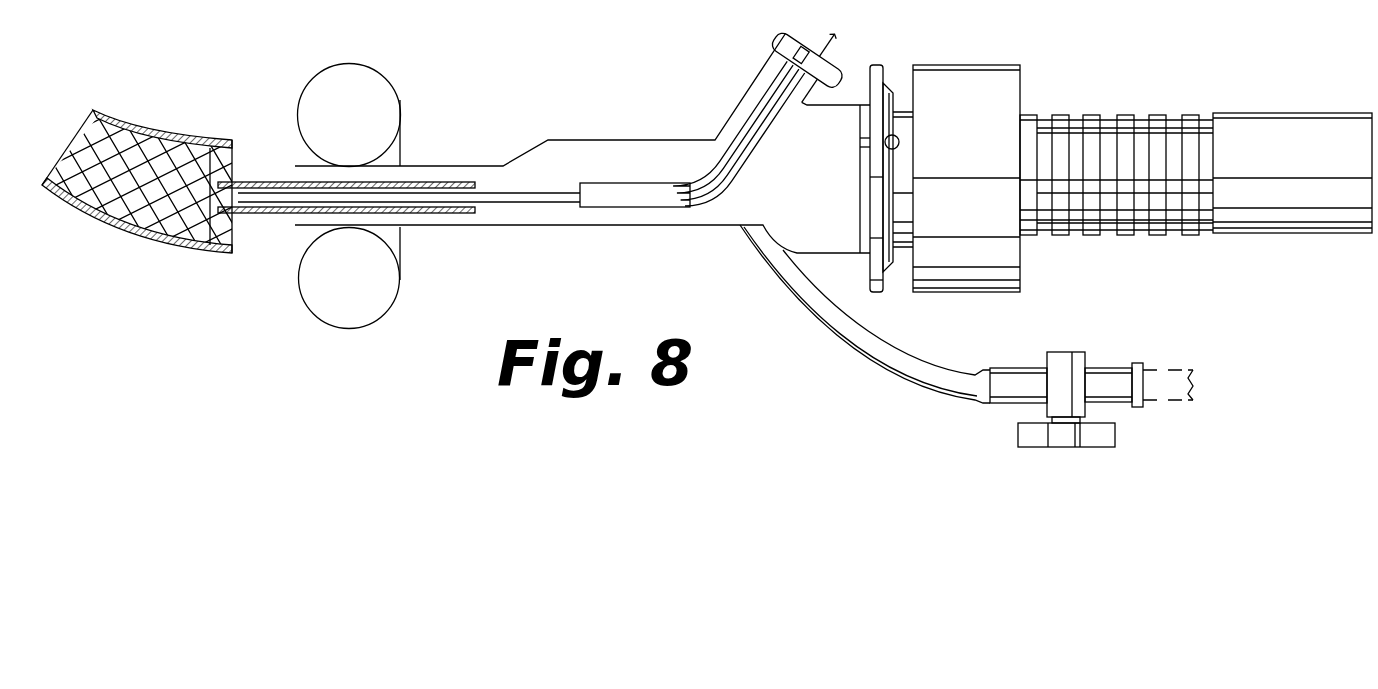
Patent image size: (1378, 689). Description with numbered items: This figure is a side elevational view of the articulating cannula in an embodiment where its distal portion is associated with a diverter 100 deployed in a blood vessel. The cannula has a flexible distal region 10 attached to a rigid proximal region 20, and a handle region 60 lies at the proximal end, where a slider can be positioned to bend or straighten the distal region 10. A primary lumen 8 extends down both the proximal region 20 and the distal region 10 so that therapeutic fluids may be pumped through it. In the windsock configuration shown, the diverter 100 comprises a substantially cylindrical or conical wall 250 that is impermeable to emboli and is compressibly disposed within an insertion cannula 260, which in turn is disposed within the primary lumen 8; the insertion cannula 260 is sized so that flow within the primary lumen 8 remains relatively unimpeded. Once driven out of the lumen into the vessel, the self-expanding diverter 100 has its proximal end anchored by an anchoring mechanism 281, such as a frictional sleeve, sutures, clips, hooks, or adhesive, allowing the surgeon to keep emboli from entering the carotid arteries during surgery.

The primary lumen 8 is at (423, 228).
The flexible distal region 10 is at (423, 123).
The rigid proximal region 20 is at (490, 136).
The handle region 60 is at (1297, 82).
The diverter 100 is at (264, 234).
The wall 250 is at (163, 138).
The insertion cannula 260 is at (268, 182).
The anchoring mechanism 281 is at (220, 254).